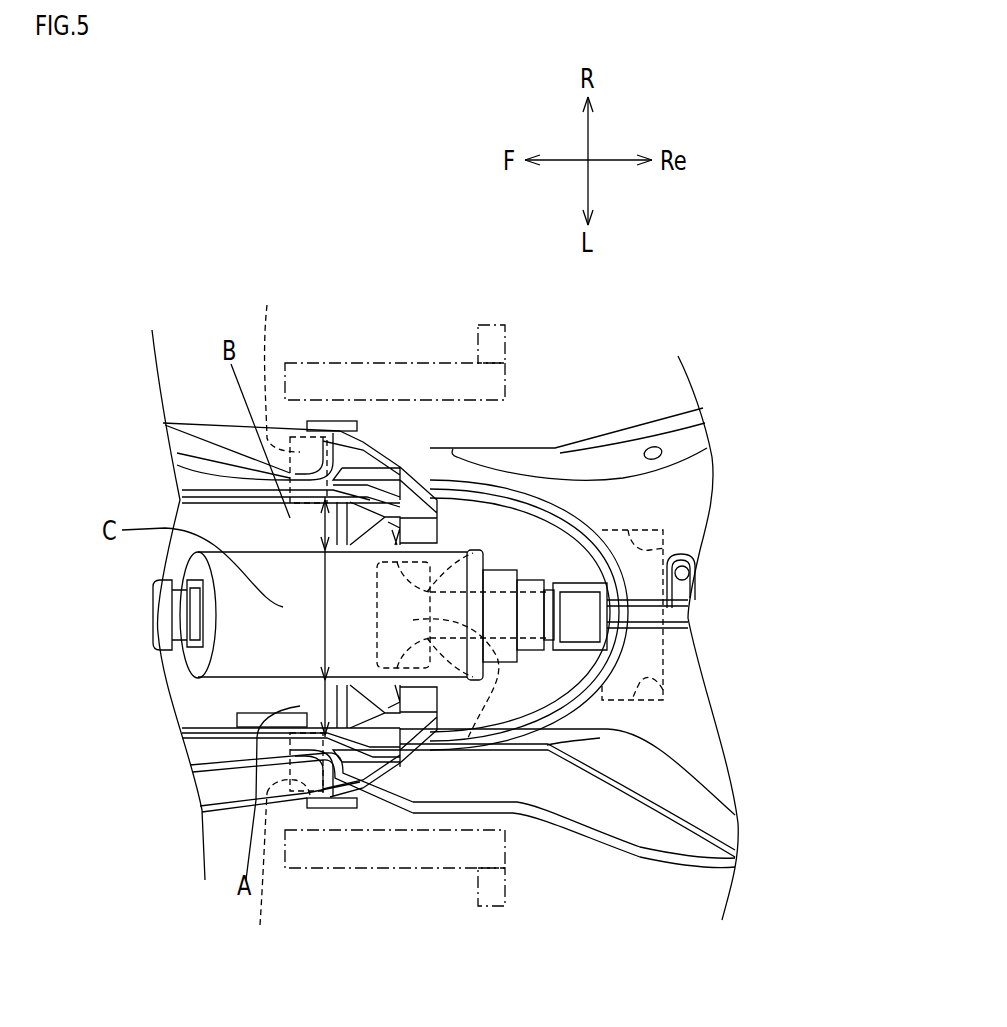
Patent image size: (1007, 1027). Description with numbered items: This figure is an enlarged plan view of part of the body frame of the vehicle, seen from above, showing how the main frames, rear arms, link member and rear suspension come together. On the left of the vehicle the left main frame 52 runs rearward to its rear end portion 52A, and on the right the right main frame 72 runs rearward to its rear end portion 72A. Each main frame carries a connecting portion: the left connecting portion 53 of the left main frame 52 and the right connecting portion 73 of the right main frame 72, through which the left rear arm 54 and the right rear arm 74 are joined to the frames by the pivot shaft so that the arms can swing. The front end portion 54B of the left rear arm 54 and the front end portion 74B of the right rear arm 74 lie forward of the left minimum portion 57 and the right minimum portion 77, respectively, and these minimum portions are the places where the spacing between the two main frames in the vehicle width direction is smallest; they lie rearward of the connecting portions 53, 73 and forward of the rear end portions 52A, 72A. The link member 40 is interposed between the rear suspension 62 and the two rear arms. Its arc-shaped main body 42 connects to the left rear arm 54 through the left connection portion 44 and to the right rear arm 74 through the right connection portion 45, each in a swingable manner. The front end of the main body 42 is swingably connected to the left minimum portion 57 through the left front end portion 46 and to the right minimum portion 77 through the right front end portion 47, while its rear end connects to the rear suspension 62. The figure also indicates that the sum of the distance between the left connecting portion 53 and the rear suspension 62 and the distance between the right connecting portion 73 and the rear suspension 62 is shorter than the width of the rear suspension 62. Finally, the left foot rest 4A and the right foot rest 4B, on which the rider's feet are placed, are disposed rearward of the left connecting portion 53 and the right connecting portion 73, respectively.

The right main frame 72 is at (197, 423).
The front end portion of the right rear arm 74B is at (266, 363).
The right connecting portion 73 is at (313, 450).
The right front end portion 47 is at (355, 450).
The rear end portion of the right main frame 72A is at (405, 470).
The right minimum portion 77 is at (455, 480).
The right foot rest 4B is at (491, 323).
The right rear arm 74 is at (645, 427).
The right connection portion 45 is at (665, 548).
The left connection portion 44 is at (663, 690).
The link member 40 is at (557, 662).
The rear suspension 62 is at (182, 663).
The left main frame 52 is at (221, 812).
The front end portion of the left rear arm 54B is at (253, 875).
The left connecting portion 53 is at (292, 740).
The left front end portion 46 is at (367, 790).
The rear end portion of the left main frame 52A is at (397, 790).
The left minimum portion 57 is at (467, 740).
The main body 42 is at (522, 745).
The left rear arm 54 is at (647, 805).
The left foot rest 4A is at (492, 907).